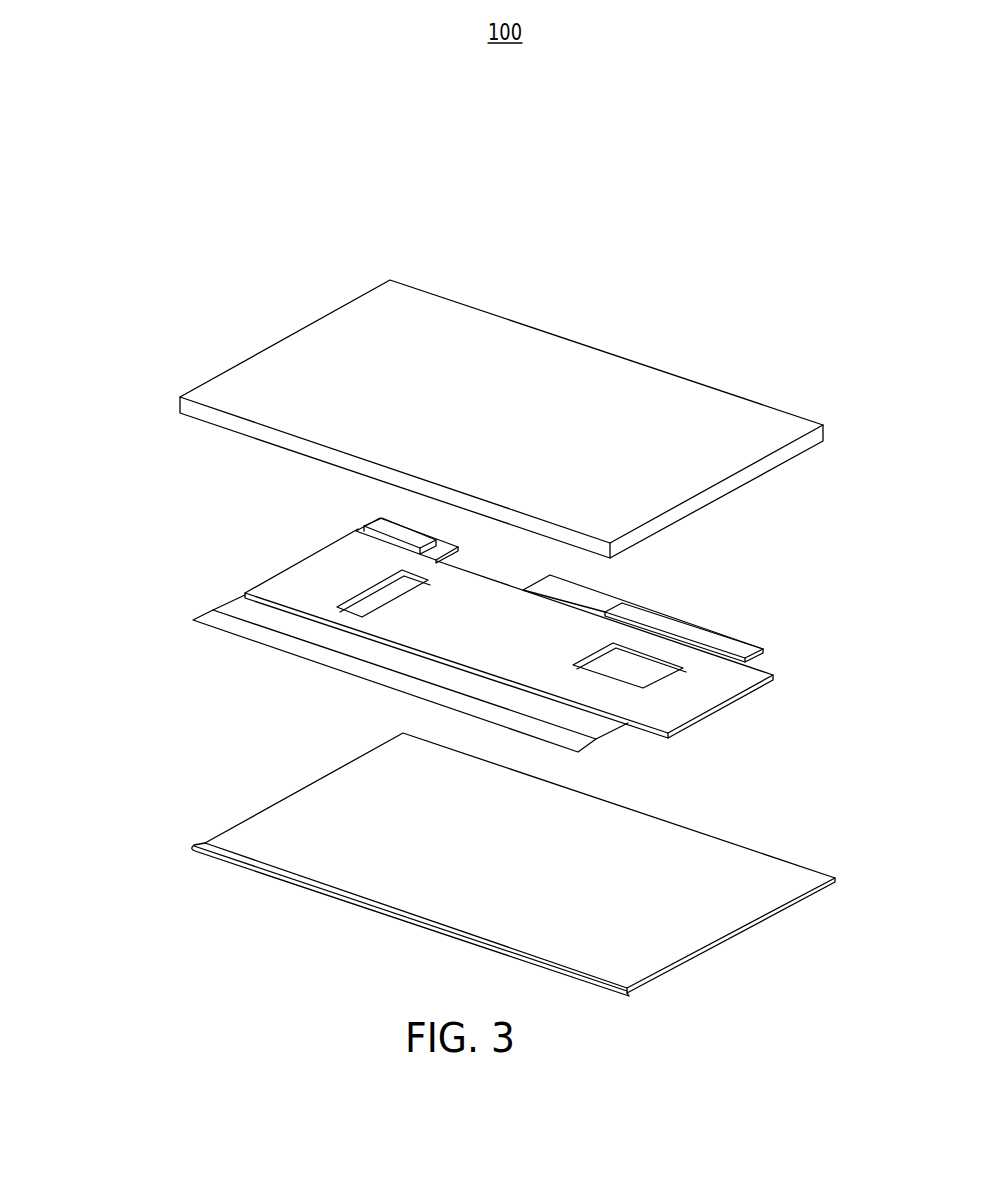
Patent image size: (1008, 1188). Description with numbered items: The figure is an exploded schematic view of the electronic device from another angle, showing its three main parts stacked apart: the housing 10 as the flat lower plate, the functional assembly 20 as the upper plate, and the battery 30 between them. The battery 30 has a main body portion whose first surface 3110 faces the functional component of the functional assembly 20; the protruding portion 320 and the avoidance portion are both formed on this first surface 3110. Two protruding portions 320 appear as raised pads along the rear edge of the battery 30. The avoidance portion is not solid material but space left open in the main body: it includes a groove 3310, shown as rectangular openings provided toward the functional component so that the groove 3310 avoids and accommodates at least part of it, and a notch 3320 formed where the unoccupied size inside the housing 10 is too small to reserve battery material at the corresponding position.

The housing 10 is at (192, 844).
The functional assembly 20 is at (572, 366).
The battery 30 is at (461, 614).
The protruding portion 320 is at (362, 526).
The first surface 3110 is at (243, 605).
The groove 3310 is at (577, 663).
The notch 3320 is at (504, 573).